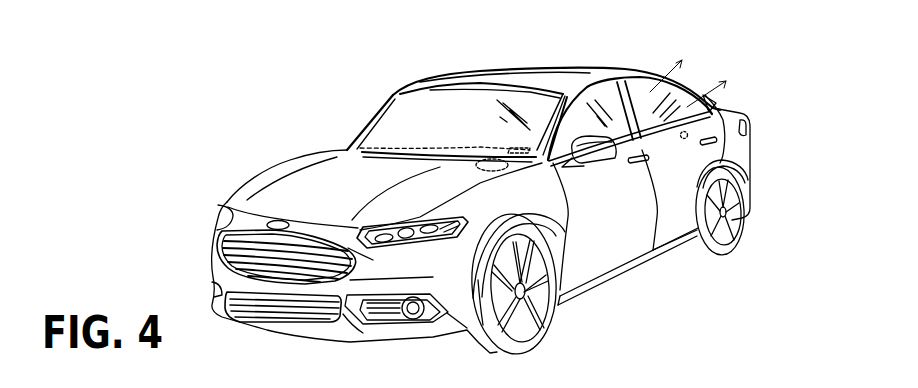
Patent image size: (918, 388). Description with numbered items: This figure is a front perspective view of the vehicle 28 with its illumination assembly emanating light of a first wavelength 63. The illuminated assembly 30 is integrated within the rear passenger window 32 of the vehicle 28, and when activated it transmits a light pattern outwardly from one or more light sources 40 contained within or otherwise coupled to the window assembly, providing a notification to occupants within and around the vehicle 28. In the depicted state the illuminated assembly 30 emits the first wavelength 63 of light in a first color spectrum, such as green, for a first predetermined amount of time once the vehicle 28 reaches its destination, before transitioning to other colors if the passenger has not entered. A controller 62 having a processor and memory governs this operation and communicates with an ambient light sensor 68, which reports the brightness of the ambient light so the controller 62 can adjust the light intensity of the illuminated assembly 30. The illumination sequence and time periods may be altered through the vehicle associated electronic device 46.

The vehicle 28 is at (300, 153).
The vehicle associated electronic device 46 is at (424, 143).
The rear passenger window 32 is at (697, 84).
The first wavelength 63 is at (709, 91).
The light sources 40 is at (662, 140).
The illuminated assembly 30 is at (686, 150).
The controller 62 is at (507, 170).
The ambient light sensor 68 is at (573, 168).